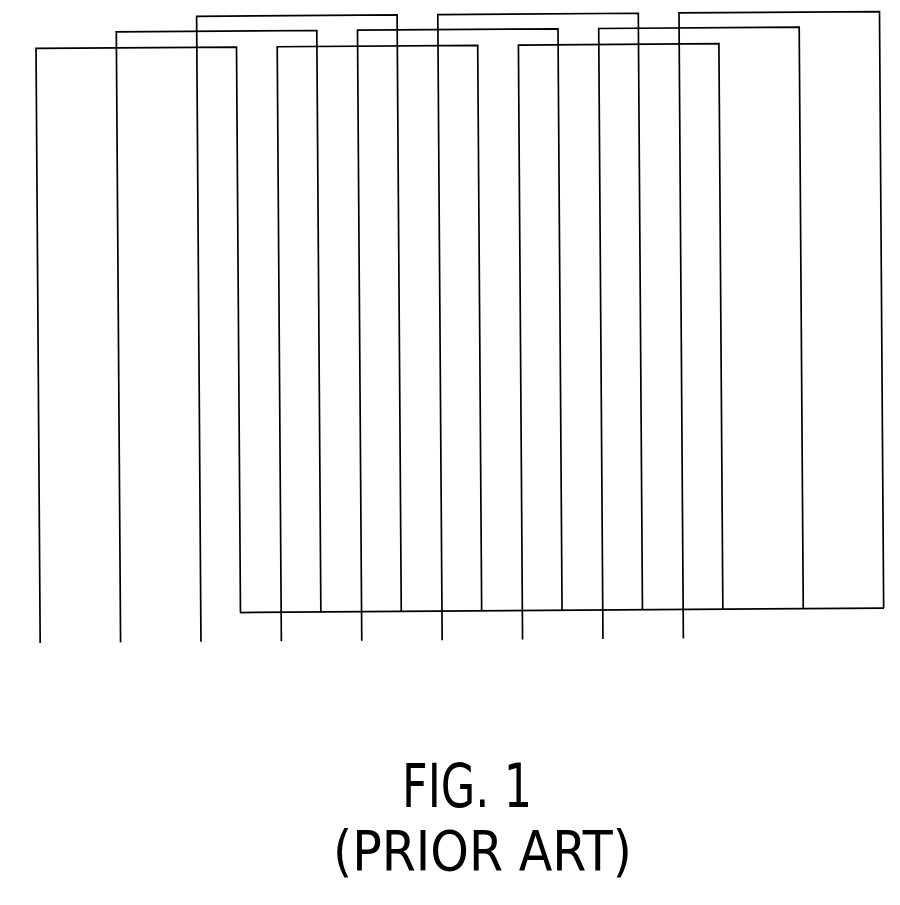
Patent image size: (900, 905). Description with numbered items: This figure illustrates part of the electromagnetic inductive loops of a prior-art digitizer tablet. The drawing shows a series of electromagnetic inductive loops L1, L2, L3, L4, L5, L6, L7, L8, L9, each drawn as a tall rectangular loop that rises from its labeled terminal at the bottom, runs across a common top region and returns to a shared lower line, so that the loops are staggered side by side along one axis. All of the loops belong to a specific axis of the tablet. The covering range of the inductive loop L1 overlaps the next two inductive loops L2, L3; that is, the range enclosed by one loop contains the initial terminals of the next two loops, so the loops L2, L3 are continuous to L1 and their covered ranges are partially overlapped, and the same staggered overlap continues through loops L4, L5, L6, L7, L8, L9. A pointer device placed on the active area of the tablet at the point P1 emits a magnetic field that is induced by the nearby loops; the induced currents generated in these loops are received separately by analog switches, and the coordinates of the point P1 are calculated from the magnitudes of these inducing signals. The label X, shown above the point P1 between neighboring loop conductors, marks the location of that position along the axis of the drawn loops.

The electromagnetic inductive loop L1 is at (134, 369).
The electromagnetic inductive loop L2 is at (214, 361).
The electromagnetic inductive loop L3 is at (295, 353).
The electromagnetic inductive loop L4 is at (375, 368).
The electromagnetic inductive loop L5 is at (456, 359).
The line L6 is at (536, 351).
The line L7 is at (616, 367).
The line L8 is at (697, 358).
The line L9 is at (777, 350).
The pixel width X is at (255, 344).
The position of pointer device P1 is at (261, 384).